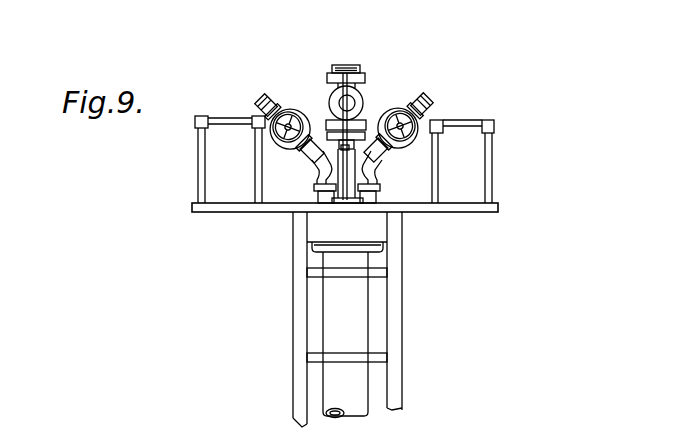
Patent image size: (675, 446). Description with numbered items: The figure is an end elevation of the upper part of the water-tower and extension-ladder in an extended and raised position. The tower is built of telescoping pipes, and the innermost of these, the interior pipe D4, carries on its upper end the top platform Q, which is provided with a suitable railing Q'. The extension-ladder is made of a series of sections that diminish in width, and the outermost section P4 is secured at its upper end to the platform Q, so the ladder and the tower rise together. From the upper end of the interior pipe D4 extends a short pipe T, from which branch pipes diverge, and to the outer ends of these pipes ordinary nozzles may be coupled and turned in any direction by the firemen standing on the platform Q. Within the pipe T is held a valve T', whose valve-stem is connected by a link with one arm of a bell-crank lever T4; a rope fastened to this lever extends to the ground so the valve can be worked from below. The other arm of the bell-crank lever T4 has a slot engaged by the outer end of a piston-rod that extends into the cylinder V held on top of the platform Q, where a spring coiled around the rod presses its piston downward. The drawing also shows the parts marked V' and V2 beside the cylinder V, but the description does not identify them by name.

The top platform Q is at (345, 222).
The railing Q' is at (474, 161).
The cylinder V is at (288, 134).
The right angle valve V' is at (399, 139).
The valve hand wheel V2 is at (407, 140).
The short pipe T is at (346, 120).
The valve T' is at (360, 93).
The bell-crank lever T4 is at (342, 92).
The outermost ladder section P4 is at (293, 325).
The interior pipe D4 is at (347, 330).